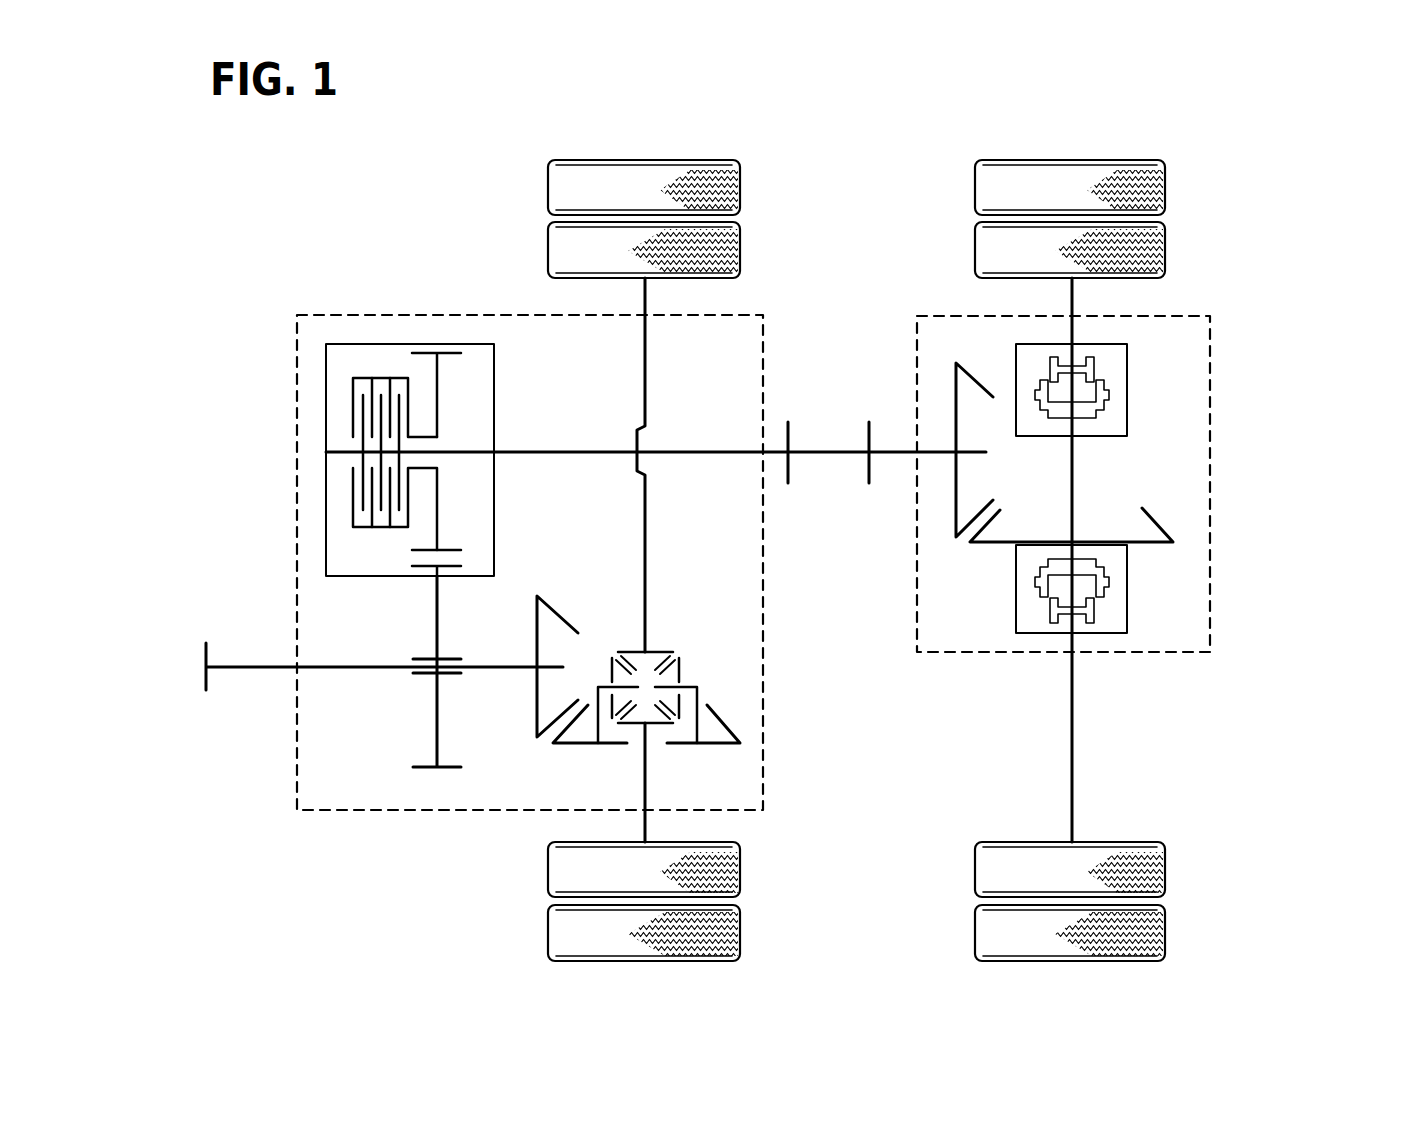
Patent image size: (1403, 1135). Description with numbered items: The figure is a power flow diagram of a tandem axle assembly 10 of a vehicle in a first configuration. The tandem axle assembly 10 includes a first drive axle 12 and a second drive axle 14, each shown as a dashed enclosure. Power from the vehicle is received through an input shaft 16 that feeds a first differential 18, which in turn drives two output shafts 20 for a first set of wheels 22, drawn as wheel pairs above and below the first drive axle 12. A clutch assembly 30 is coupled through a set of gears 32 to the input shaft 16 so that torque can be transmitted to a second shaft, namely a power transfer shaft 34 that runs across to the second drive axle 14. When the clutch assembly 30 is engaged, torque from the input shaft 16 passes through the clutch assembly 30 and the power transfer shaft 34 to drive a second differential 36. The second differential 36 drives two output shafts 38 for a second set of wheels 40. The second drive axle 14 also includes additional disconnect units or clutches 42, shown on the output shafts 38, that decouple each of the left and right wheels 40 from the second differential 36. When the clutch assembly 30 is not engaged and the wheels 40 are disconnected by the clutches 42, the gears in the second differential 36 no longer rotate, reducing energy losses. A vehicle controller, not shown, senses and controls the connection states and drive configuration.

The tandem axle assembly 10 is at (878, 188).
The first drive axle 12 is at (763, 316).
The second drive axle 14 is at (1207, 367).
The input shaft 16 is at (280, 672).
The first differential 18 is at (550, 763).
The output shafts 20 is at (646, 361).
The first set of wheels 22 is at (768, 907).
The clutch assembly 30 is at (327, 437).
The set of gears 32 is at (410, 687).
The power transfer shaft 34 is at (718, 455).
The second differential 36 is at (978, 580).
The output shafts 38 is at (1073, 302).
The second set of wheels 40 is at (1182, 888).
The disconnect units or clutches 42 is at (1127, 392).